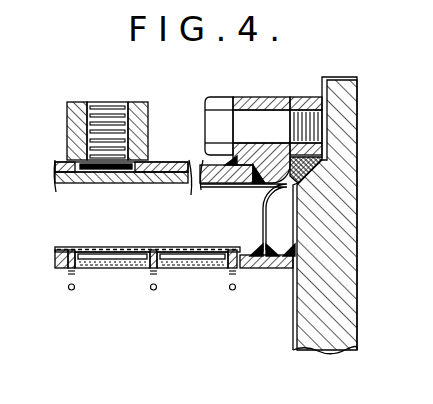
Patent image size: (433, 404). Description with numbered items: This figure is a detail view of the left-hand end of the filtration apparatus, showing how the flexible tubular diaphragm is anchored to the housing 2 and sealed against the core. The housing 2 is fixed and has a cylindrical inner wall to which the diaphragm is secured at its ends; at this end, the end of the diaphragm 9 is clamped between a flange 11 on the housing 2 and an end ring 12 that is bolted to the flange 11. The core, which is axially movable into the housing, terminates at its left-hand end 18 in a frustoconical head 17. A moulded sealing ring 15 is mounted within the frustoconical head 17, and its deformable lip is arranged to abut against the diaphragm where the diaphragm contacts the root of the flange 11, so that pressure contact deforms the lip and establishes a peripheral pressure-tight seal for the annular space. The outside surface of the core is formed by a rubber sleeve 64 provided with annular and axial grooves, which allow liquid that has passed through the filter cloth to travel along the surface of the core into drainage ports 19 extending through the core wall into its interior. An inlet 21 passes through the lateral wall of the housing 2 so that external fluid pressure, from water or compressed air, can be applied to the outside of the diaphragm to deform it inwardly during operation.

The housing 2 is at (205, 165).
The end of the diaphragm 9 is at (231, 188).
The flange 11 is at (257, 98).
The end ring 12 is at (307, 97).
The sealing ring 15 is at (313, 160).
The frustoconical head 17 is at (333, 302).
The left-hand end of the core 18 is at (276, 266).
The drainage ports 19 is at (150, 255).
The inlet 21 is at (143, 112).
The rubber sleeve 64 is at (262, 233).